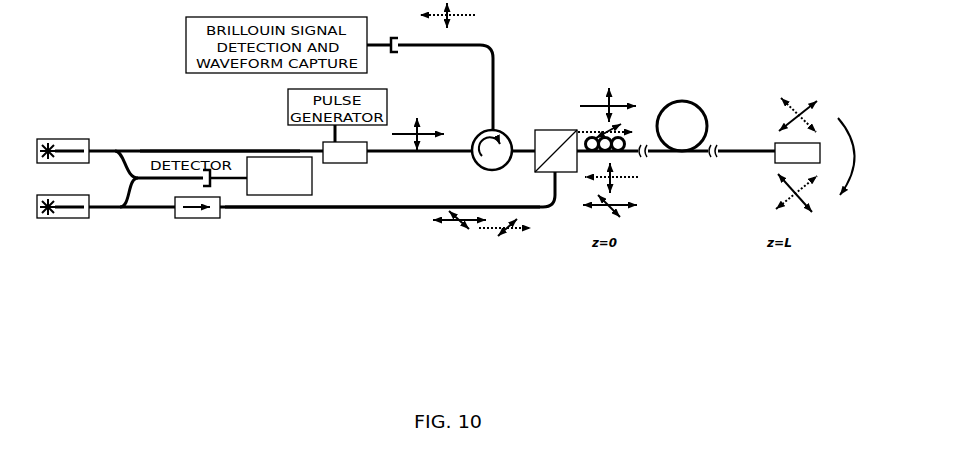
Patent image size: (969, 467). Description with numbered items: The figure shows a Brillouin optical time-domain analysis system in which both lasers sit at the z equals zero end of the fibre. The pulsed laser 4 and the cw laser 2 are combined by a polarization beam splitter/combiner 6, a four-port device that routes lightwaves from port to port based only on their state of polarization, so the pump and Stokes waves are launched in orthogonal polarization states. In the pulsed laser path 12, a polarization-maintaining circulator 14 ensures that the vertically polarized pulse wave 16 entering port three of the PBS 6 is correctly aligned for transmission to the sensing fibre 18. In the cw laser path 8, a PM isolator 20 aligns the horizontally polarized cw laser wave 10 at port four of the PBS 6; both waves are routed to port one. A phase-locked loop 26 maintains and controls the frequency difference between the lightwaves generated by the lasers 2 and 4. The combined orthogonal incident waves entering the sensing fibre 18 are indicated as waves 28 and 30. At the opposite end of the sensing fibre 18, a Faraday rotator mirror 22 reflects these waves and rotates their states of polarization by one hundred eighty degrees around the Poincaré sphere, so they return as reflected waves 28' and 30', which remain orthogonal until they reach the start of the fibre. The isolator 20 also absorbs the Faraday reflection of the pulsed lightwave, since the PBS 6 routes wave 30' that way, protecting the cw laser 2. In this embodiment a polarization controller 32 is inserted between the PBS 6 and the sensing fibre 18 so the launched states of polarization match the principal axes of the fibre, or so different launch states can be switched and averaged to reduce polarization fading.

The cw laser 2 is at (96, 222).
The pulsed laser 4 is at (76, 117).
The polarization beam splitter/combiner 6 is at (536, 125).
The cw laser path 8 is at (348, 209).
The cw laser wave 10 is at (533, 236).
The pulsed laser path 12 is at (216, 147).
The circulator 14 is at (509, 130).
The pulse wave 16 is at (400, 127).
The sensing fibre 18 is at (699, 101).
The PM isolator 20 is at (168, 214).
The Faraday rotator mirror 22 is at (822, 139).
The phase-locked loop 26 is at (313, 168).
The incident cw wave 28 is at (605, 87).
The incident pulse wave 30 is at (641, 90).
The reflected wave 28' is at (647, 181).
The reflected wave 30' is at (637, 214).
The polarization controller 32 is at (597, 158).